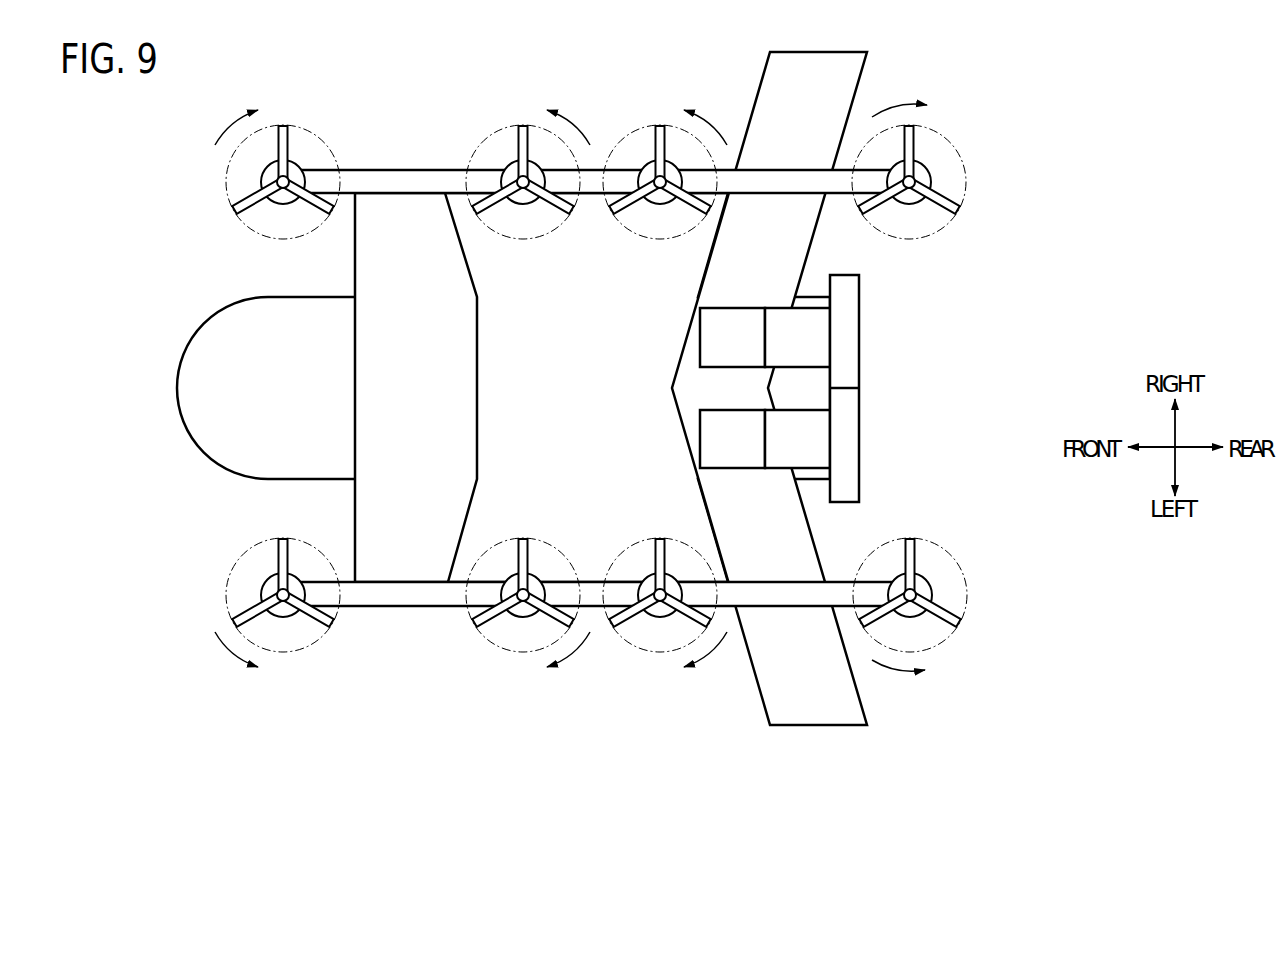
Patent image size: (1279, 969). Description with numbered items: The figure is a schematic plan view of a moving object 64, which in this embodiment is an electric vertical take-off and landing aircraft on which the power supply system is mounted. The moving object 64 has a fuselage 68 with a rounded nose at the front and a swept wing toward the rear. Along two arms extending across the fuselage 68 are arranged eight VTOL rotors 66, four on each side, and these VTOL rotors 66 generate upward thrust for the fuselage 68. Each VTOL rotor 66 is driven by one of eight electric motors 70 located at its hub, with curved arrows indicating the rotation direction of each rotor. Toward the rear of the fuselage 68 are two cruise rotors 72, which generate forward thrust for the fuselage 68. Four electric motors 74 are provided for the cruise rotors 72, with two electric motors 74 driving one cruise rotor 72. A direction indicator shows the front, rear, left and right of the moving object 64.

The moving object 64 is at (99, 146).
The VTOL rotor 66 is at (284, 126).
The fuselage 68 is at (184, 356).
The electric motor 70 is at (283, 205).
The cruise rotor 72 is at (860, 323).
The electric motor 74 is at (717, 342).